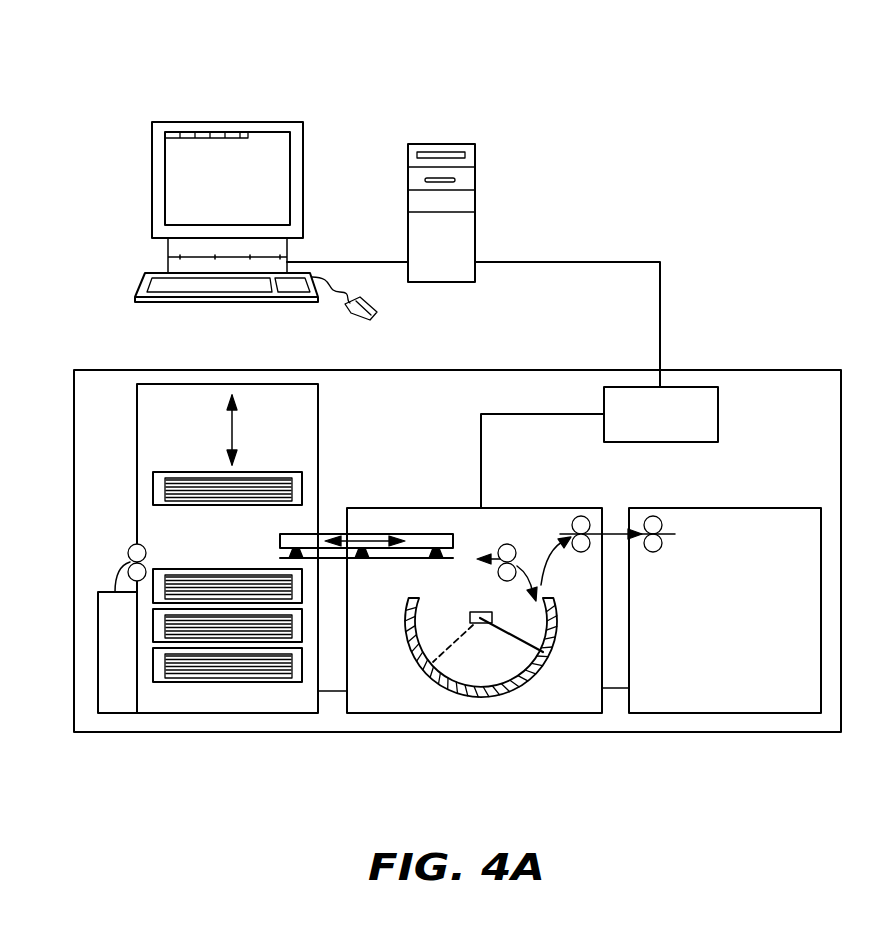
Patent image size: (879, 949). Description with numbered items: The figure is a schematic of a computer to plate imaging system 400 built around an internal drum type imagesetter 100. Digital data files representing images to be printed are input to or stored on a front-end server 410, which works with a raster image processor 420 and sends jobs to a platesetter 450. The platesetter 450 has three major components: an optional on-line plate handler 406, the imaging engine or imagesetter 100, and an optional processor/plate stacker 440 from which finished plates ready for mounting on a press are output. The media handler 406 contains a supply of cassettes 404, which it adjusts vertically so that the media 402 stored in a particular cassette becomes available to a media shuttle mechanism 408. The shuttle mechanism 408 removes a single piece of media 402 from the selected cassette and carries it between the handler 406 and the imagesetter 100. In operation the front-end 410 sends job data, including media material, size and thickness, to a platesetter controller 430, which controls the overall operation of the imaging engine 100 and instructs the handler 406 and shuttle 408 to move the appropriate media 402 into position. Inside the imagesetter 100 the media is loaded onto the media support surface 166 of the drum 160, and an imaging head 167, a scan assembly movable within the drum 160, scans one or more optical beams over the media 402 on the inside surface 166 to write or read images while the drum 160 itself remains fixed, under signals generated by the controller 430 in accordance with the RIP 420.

The computer to plate imaging system 400 is at (700, 93).
The front-end server 410 is at (300, 129).
The raster image processor (RIP) 420 is at (468, 204).
The platesetter 450 is at (807, 369).
The platesetter controller 430 is at (709, 427).
The processor/plate stacker 440 is at (733, 516).
The on-line plate handler 406 is at (137, 475).
The media 402 is at (203, 487).
The media cassettes 404 is at (158, 676).
The media shuttle mechanism 408 is at (328, 537).
The internal drum type imagesetter 100 is at (442, 508).
The drum 160 is at (512, 692).
The media support surface 166 is at (418, 633).
The imaging head 167 is at (478, 624).